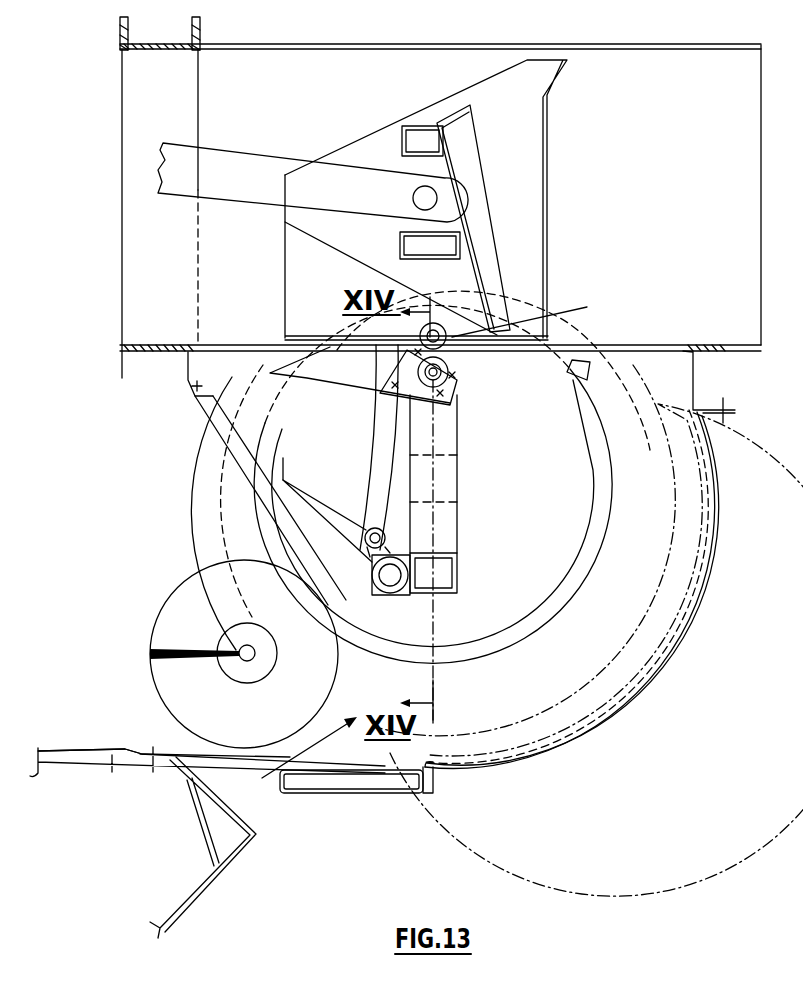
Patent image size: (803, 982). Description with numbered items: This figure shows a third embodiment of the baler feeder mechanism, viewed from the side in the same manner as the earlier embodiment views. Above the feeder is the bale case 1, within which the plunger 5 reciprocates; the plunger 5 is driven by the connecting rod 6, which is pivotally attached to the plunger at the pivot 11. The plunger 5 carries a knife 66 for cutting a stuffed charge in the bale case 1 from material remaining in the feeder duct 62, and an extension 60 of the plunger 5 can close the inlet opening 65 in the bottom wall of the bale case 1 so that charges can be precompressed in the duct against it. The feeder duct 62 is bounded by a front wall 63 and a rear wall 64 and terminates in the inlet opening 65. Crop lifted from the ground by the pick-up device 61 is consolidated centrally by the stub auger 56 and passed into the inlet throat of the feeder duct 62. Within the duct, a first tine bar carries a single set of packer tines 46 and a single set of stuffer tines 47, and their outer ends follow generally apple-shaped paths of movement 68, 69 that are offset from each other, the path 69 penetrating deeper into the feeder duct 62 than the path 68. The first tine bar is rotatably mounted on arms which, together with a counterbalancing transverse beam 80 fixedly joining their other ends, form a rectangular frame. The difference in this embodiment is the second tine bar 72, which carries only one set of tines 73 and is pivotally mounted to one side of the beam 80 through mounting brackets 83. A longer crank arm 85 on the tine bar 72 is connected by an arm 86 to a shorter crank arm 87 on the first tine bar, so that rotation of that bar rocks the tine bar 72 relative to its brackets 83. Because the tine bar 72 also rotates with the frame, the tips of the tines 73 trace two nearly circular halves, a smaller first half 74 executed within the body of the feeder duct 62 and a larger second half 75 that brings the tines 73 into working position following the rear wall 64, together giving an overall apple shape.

The bale case 1 is at (632, 72).
The plunger 5 is at (547, 167).
The connecting rod 6 is at (248, 170).
The pivot 11 is at (412, 197).
The packer tines 46 is at (357, 372).
The stuffer tines 47 is at (493, 362).
The stub auger 56 is at (167, 604).
The plunger extension 60 is at (290, 342).
The pick-up device 61 is at (80, 740).
The feeder duct 62 is at (290, 763).
The front wall 63 is at (601, 492).
The rear wall 64 is at (687, 628).
The inlet opening 65 is at (652, 341).
The knife 66 is at (580, 318).
The path of movement 68 is at (668, 512).
The path of movement 69 is at (697, 456).
The second tine bar 72 is at (400, 590).
The tines 73 is at (330, 513).
The first path half 74 is at (283, 460).
The second path half 75 is at (270, 330).
The counterbalancing transverse beam 80 is at (457, 574).
The mounting brackets 83 is at (378, 596).
The crank arm 85 is at (392, 545).
The arm 86 is at (378, 421).
The crank arm 87 is at (457, 392).